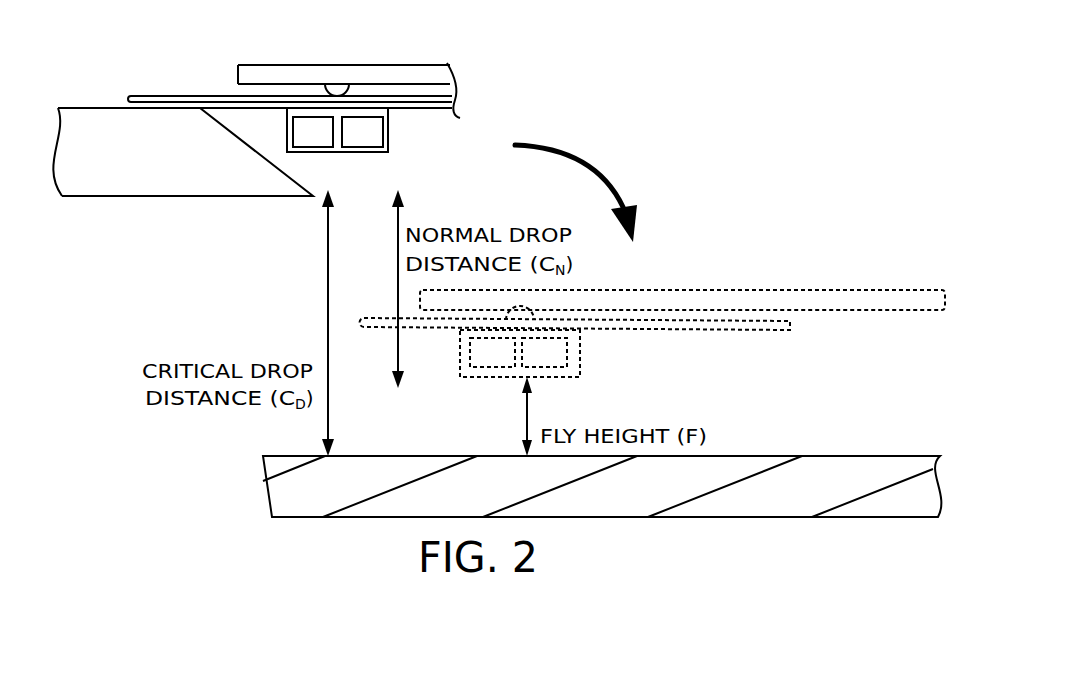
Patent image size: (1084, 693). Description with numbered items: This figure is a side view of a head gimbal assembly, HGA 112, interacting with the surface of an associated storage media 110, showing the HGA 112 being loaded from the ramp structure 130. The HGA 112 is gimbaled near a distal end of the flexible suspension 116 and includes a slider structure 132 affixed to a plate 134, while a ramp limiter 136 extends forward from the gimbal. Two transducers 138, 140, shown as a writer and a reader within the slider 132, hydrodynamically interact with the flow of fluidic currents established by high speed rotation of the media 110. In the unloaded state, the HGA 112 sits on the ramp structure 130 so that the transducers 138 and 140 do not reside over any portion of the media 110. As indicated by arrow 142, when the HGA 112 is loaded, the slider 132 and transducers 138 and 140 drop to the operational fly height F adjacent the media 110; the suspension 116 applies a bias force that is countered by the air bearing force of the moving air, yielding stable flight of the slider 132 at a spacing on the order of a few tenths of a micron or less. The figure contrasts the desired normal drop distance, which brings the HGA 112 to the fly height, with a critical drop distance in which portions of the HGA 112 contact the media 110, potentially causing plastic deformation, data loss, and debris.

The media 110 is at (768, 456).
The HGA 112 is at (258, 135).
The flexible suspension 116 is at (252, 66).
The ramp structure 130 is at (205, 198).
The slider structure 132 is at (389, 121).
The plate 134 is at (421, 92).
The ramp limiter 136 is at (127, 99).
The transducer 138 is at (363, 148).
The transducer 140 is at (313, 148).
The arrow 142 is at (623, 202).